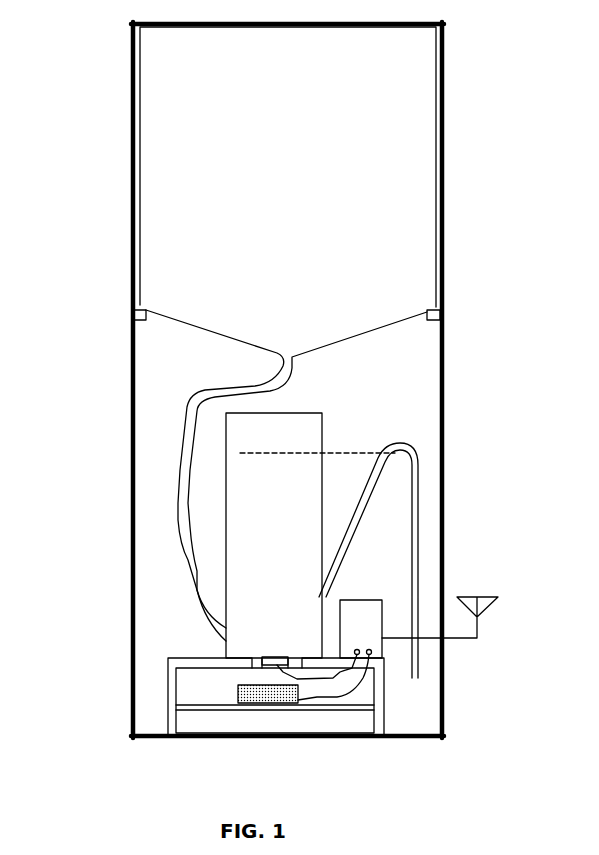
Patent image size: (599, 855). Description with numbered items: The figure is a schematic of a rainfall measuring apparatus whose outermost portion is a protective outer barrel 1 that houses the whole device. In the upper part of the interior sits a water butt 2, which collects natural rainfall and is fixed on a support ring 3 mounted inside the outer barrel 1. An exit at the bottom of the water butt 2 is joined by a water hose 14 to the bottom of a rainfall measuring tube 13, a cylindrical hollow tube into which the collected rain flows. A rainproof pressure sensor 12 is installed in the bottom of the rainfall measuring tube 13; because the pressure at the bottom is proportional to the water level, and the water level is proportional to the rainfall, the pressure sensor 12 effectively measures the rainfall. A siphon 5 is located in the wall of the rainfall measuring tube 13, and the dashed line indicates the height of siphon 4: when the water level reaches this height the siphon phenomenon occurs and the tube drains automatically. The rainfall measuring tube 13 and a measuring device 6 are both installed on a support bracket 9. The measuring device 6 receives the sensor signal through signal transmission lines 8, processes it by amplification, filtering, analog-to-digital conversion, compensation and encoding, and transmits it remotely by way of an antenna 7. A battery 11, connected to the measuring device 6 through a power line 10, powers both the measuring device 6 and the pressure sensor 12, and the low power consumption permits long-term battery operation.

The outer barrel 1 is at (444, 157).
The water butt 2 is at (423, 238).
The support ring 3 is at (444, 318).
The height of siphon 4 is at (347, 453).
The siphon 5 is at (415, 493).
The measuring device 6 is at (400, 597).
The antenna 7 is at (480, 610).
The signal transmission lines 8 is at (342, 670).
The support bracket 9 is at (378, 703).
The power line 10 is at (330, 696).
The battery 11 is at (257, 697).
The pressure sensor 12 is at (275, 662).
The rainfall measuring tube 13 is at (110, 501).
The water hose 14 is at (93, 363).